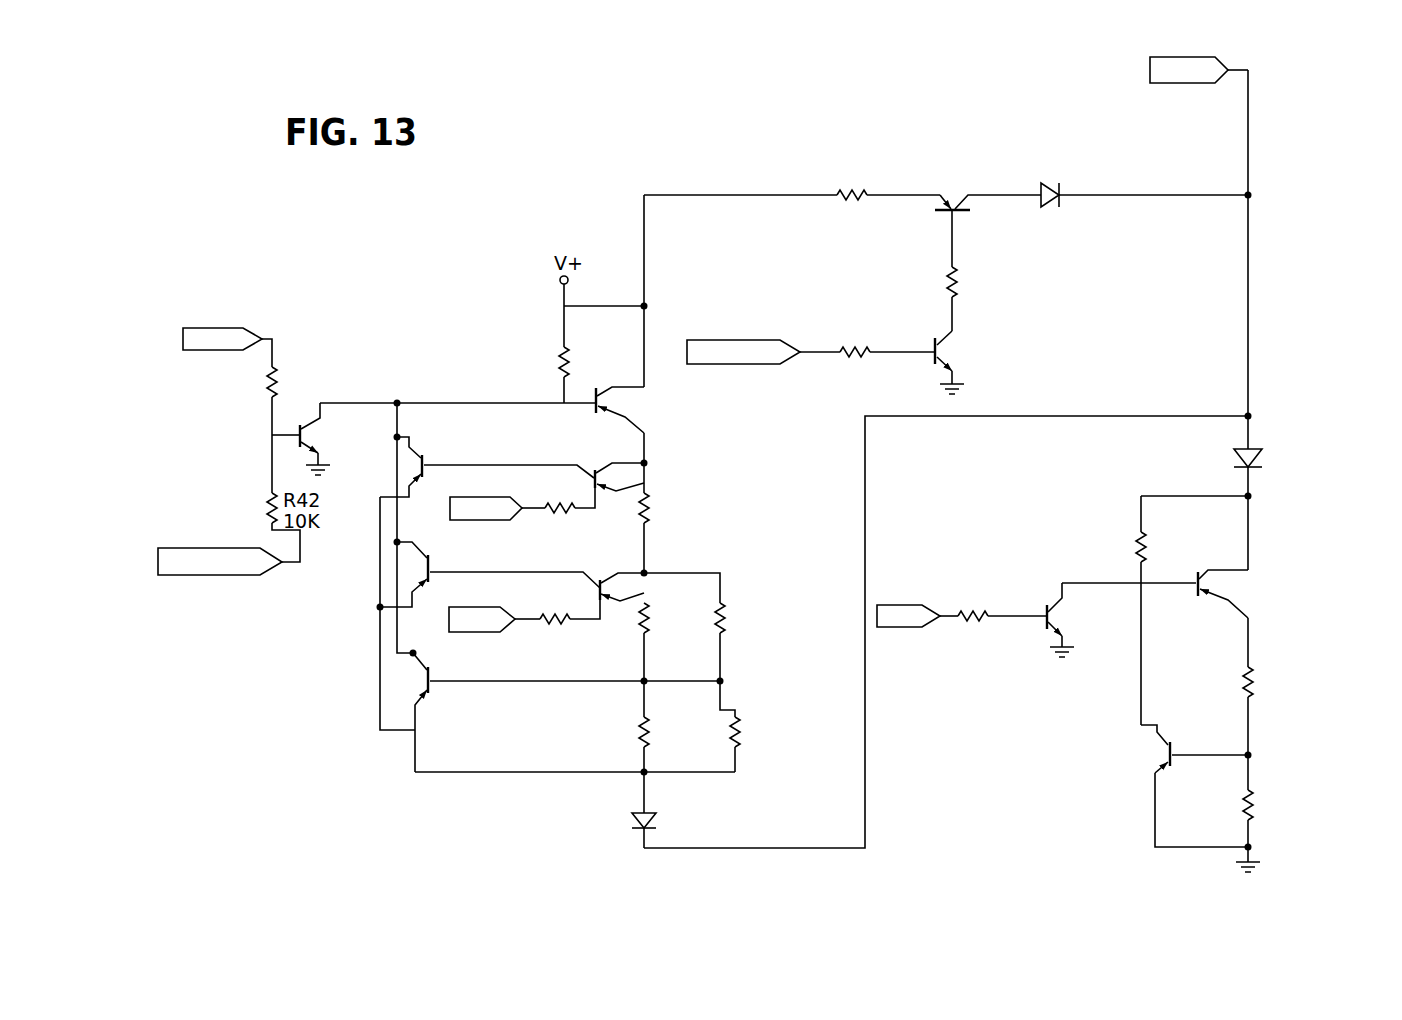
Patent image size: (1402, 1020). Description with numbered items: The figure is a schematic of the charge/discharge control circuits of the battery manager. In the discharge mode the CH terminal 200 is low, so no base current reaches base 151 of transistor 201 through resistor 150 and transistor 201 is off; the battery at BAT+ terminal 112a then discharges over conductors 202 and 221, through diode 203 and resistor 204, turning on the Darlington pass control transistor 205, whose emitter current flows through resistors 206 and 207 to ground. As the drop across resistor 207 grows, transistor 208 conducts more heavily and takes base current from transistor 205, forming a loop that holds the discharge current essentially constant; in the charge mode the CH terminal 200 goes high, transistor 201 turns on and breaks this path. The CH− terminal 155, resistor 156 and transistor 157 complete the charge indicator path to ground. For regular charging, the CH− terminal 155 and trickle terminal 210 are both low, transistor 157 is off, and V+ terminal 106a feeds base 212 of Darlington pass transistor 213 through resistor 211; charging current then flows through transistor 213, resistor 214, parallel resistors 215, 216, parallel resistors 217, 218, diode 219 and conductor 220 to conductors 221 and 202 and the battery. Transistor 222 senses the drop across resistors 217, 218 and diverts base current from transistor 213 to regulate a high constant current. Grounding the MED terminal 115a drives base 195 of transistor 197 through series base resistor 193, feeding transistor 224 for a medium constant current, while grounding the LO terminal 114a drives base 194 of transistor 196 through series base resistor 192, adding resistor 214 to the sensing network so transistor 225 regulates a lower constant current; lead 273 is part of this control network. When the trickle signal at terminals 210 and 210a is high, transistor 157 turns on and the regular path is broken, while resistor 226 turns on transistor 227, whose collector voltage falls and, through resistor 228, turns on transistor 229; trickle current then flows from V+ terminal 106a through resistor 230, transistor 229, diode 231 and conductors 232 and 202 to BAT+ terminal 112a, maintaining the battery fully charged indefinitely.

The CH− terminal 155 is at (242, 323).
The resistor 156 is at (268, 380).
The transistor 157 is at (297, 441).
The trickle terminal 210 is at (233, 547).
The transistor 225 is at (408, 474).
The collector lead of transistor Q10 273 is at (412, 546).
The transistor 224 is at (420, 568).
The transistor 222 is at (415, 682).
The LO terminal 114a is at (506, 497).
The series base resistor 192 is at (574, 511).
The transistor 196 is at (592, 468).
The transistor 197 is at (597, 576).
The series base resistor 193 is at (575, 620).
The MED terminal 115a is at (500, 633).
The resistor 211 is at (560, 362).
The V+ terminal 106a is at (606, 296).
The base of Darlington pass transistor 212 is at (590, 405).
The Darlington pass transistor 213 is at (645, 417).
The base of transistor 196 194 is at (647, 463).
The resistor 214 is at (649, 490).
The base of transistor 197 195 is at (681, 577).
The resistor 215 is at (648, 640).
The resistor 216 is at (724, 636).
The resistor 217 is at (641, 737).
The resistor 218 is at (737, 750).
The diode 219 is at (637, 812).
The conductor 220 is at (819, 850).
The resistor 230 is at (836, 198).
The transistor 229 is at (962, 215).
The resistor 228 is at (946, 286).
The transistor 227 is at (949, 359).
The trickle terminal 210a is at (784, 341).
The resistor 226 is at (832, 354).
The diode 231 is at (1062, 188).
The conductor 232 is at (1227, 194).
The BAT+ terminal 112a is at (1227, 38).
The conductor 202 is at (1249, 136).
The conductor 221 is at (1249, 262).
The diode 203 is at (1263, 468).
The resistor 204 is at (1137, 550).
The CH terminal 200 is at (939, 616).
The resistor 150 is at (987, 616).
The base of transistor 201 151 is at (1046, 626).
The transistor 201 is at (1062, 629).
The Darlington pass control transistor 205 is at (1227, 601).
The resistor 206 is at (1243, 687).
The transistor 208 is at (1165, 753).
The resistor 207 is at (1251, 801).